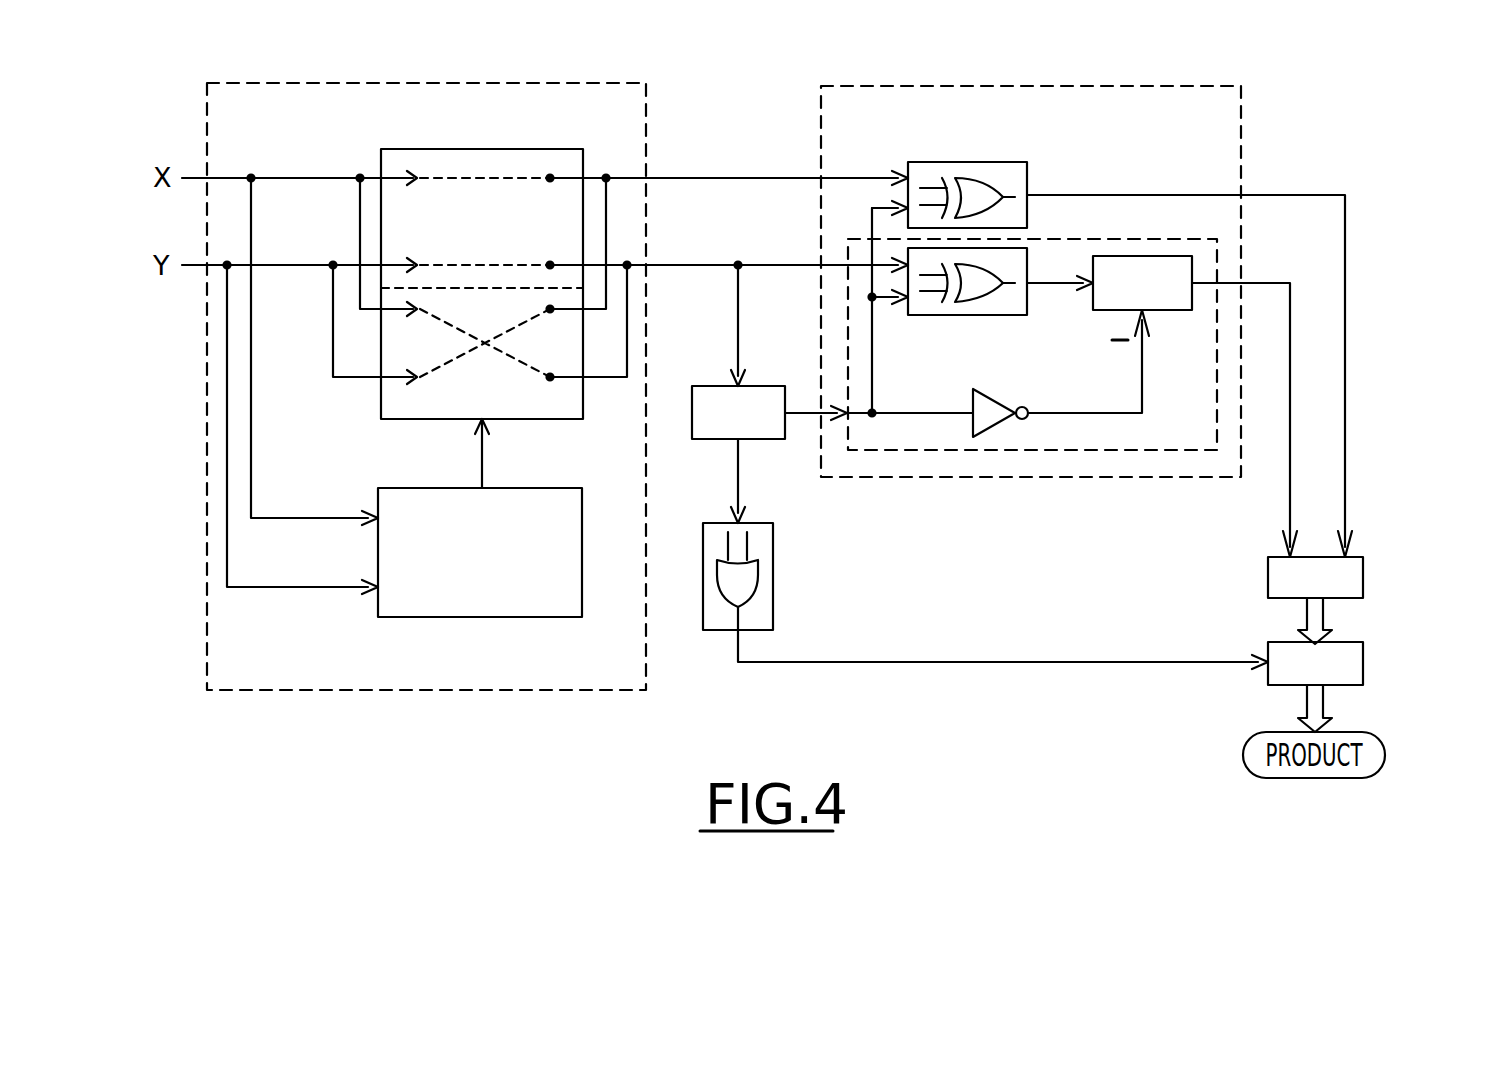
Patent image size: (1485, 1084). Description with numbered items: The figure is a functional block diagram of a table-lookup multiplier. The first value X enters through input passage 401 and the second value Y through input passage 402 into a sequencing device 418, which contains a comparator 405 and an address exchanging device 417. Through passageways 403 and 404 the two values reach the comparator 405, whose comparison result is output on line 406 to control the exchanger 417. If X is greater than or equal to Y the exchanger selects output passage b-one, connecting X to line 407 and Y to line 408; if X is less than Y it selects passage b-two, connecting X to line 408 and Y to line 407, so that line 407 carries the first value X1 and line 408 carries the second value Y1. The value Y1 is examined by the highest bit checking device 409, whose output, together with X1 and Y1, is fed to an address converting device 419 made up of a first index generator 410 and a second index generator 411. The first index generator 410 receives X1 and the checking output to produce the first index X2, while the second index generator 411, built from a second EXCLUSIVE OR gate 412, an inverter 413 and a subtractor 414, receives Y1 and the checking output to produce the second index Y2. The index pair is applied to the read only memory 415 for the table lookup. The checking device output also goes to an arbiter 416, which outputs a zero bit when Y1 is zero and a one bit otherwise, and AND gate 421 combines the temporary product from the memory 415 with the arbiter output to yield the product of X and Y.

The input passage 401 is at (267, 178).
The input passage 402 is at (267, 265).
The passageway 403 is at (250, 407).
The passageway 404 is at (258, 588).
The comparator 405 is at (480, 618).
The comparison result output 406 is at (482, 463).
The output passage 407 is at (680, 178).
The output passage 408 is at (680, 265).
The highest bit checking device 409 is at (720, 386).
The first index generator 410 is at (978, 162).
The second index generator 411 is at (1137, 239).
The second EXCLUSIVE OR gate 412 is at (977, 316).
The inverter 413 is at (993, 395).
The subtractor 414 is at (1173, 310).
The read only memory 415 is at (1363, 568).
The arbiter 416 is at (773, 580).
The address exchanging device 417 is at (482, 149).
The sequencing device 418 is at (423, 83).
The address converting device 419 is at (1080, 86).
The AND gate 421 is at (1363, 652).